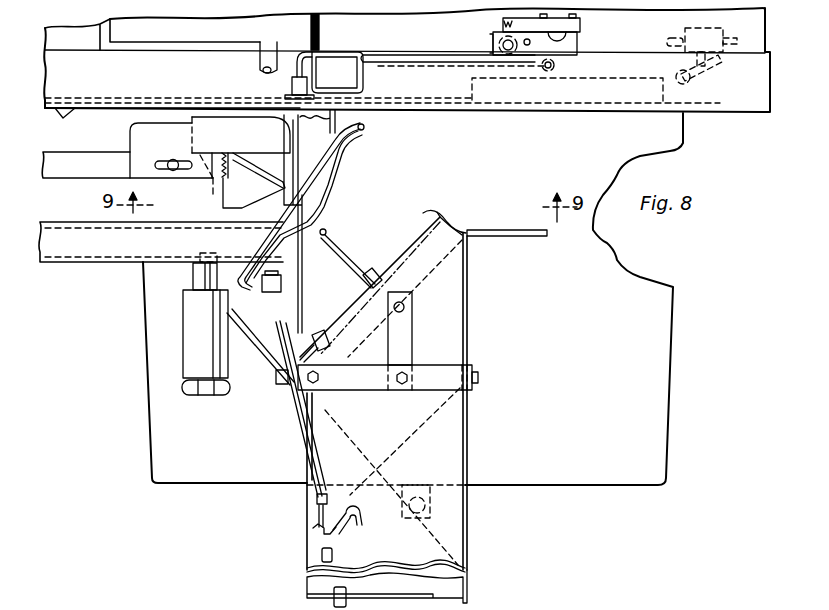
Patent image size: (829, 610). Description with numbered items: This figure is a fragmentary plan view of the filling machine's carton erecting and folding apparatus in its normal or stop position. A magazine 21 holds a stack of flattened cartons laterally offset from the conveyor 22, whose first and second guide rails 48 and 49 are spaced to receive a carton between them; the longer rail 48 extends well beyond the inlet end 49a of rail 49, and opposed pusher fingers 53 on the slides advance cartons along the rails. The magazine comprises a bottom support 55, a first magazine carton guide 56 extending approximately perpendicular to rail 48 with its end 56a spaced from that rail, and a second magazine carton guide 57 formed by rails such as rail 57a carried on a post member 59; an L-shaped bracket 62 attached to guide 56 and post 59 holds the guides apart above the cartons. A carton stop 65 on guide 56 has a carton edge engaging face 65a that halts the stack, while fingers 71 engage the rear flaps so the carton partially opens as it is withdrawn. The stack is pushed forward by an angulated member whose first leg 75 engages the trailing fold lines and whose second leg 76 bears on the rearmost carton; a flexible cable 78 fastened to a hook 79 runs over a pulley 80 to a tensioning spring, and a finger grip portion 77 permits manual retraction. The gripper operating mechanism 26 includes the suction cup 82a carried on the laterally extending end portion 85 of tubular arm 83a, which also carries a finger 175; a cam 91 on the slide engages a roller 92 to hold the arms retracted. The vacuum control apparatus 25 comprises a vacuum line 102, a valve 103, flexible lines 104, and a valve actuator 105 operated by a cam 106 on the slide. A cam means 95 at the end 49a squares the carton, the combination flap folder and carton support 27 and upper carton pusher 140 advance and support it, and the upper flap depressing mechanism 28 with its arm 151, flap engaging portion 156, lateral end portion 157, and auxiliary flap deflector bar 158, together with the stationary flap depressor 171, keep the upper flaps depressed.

The magazine 21 is at (467, 542).
The conveyor 22 is at (727, 113).
The vacuum control apparatus 25 is at (690, 44).
The operating mechanism 26 is at (489, 44).
The combination flap folder and carton support 27 is at (213, 193).
The upper flap depressing mechanism 28 is at (366, 127).
The first guide rail 48 is at (152, 107).
The second guide rail 49 is at (145, 223).
The inlet end of rail 49 49a is at (308, 222).
The pusher fingers 53 is at (63, 110).
The bottom support 55 is at (447, 445).
The first magazine carton guide 56 is at (467, 513).
The end of first magazine carton guide 56a is at (468, 231).
The second magazine carton guide 57 is at (322, 555).
The rail 57a is at (333, 592).
The post member 59 is at (305, 407).
The L-shaped bracket 62 is at (427, 372).
The carton stop 65 is at (462, 222).
The carton edge engaging face 65a is at (430, 214).
The fingers 71 is at (407, 307).
The first leg 75 is at (318, 513).
The second leg 76 is at (358, 511).
The finger grip portion 77 is at (313, 528).
The flexible cable 78 is at (305, 438).
The hook 79 is at (317, 498).
The pulley 80 is at (283, 357).
The suction cup 82a is at (291, 88).
The tubular arm 83a is at (417, 66).
The laterally extending end portion 85 is at (298, 52).
The cam 91 is at (375, 72).
The roller follower 92 is at (492, 37).
The cam means 95 is at (302, 290).
The vacuum line 102 is at (728, 40).
The valve 103 is at (700, 29).
The flexible lines 104 is at (668, 37).
The valve actuator 105 is at (690, 80).
The cam 106 is at (588, 78).
The upper carton pusher 140 is at (277, 125).
The arm 151 is at (252, 292).
The flap engaging portion 156 is at (272, 220).
The lateral end portion 157 is at (360, 133).
The auxiliary flap deflector bar 158 is at (257, 245).
The stationary flap depressor 171 is at (172, 146).
The finger 175 is at (330, 90).